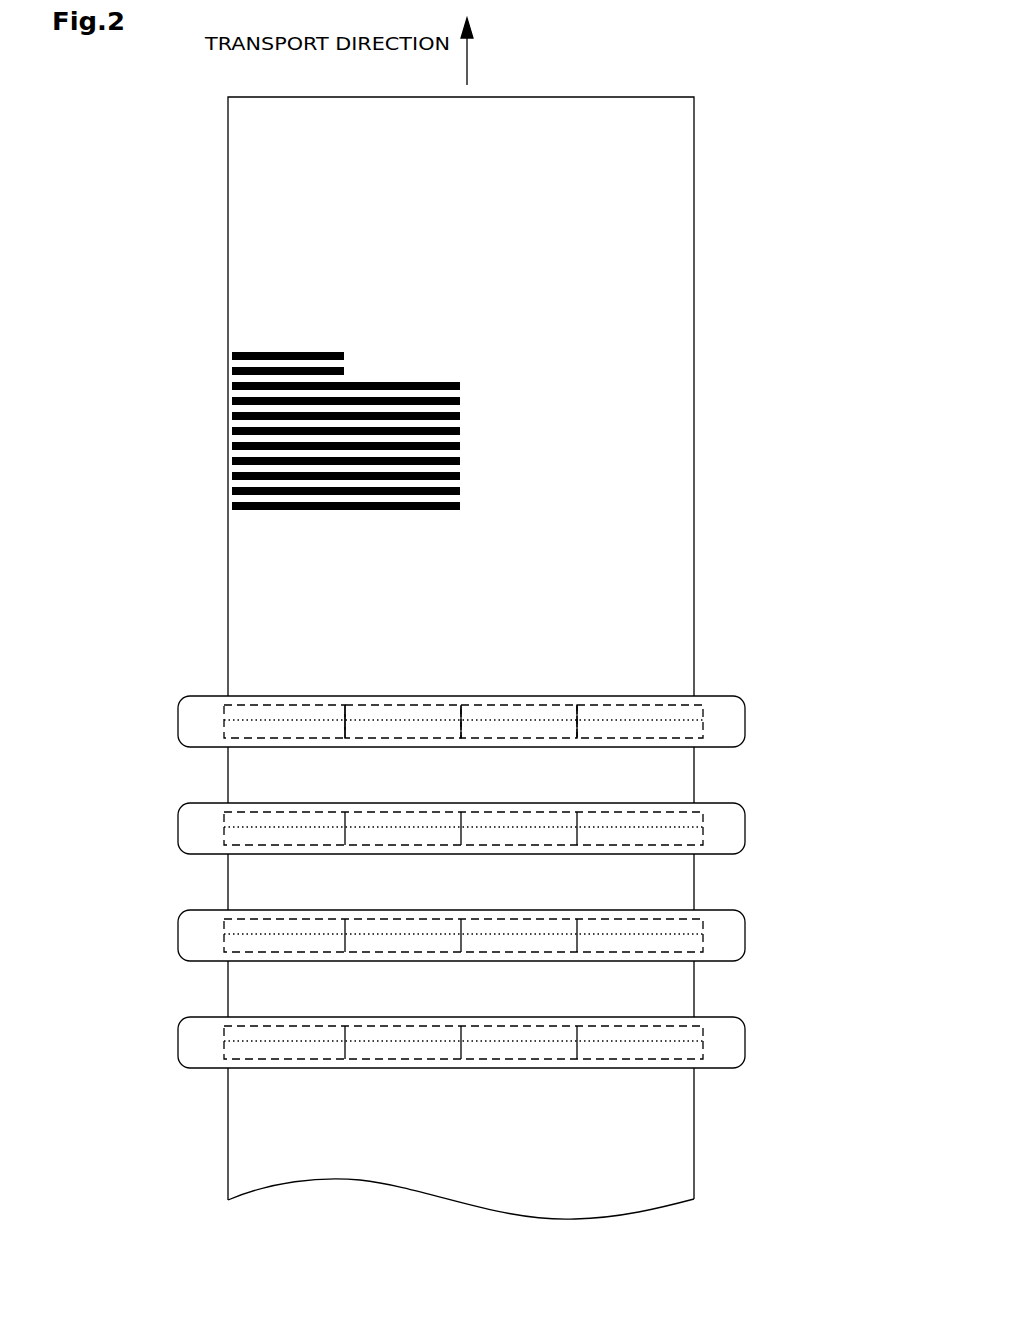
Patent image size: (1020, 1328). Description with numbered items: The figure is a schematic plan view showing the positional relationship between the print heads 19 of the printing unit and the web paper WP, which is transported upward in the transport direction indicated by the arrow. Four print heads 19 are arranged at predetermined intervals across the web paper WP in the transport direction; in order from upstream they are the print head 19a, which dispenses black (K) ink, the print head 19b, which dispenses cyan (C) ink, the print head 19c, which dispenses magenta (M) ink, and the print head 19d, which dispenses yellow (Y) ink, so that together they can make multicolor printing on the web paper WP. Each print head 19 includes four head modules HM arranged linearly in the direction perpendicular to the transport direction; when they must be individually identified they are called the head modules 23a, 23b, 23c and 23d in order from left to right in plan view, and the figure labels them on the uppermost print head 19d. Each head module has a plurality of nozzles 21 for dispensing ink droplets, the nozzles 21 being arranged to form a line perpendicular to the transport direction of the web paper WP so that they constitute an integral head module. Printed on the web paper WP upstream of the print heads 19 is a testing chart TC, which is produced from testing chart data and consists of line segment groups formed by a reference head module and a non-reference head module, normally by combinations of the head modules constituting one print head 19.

The print head 19 is at (523, 846).
The print head 19a is at (733, 1037).
The print head 19b is at (733, 930).
The print head 19c is at (733, 823).
The print head 19d is at (523, 686).
The nozzles 21 is at (242, 720).
The head module 23a is at (283, 705).
The head module 23b is at (413, 705).
The head module 23c is at (518, 705).
The head module 23d is at (630, 705).
The web paper WP is at (235, 113).
The testing chart TC is at (359, 323).